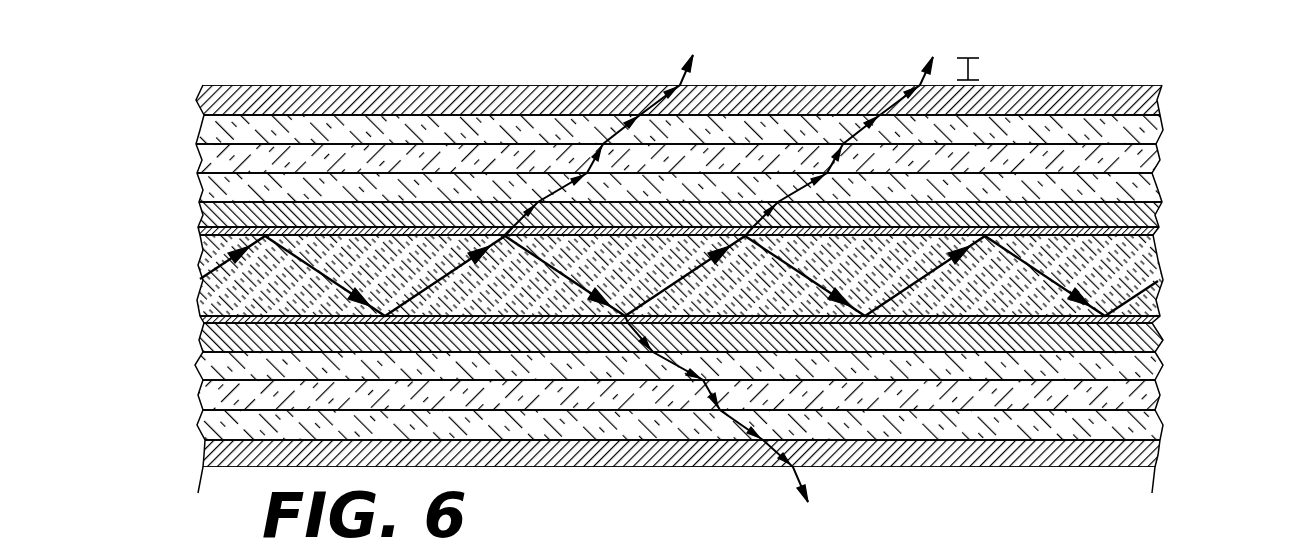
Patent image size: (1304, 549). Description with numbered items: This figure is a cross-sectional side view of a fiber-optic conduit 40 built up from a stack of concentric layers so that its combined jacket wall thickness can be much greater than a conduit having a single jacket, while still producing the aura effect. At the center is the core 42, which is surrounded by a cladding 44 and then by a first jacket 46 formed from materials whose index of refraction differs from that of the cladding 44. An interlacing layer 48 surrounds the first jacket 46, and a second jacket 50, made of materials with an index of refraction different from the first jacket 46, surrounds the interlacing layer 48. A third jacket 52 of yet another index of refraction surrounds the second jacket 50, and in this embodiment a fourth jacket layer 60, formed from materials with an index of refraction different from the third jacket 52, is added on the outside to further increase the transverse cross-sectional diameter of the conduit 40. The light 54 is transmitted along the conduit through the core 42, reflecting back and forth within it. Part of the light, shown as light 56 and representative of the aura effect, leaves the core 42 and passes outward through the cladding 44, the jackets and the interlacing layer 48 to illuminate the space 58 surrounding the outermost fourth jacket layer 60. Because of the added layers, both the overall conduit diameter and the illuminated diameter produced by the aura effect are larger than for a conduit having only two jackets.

The fiber-optic conduit 40 is at (1195, 370).
The core 42 is at (1137, 263).
The cladding 44 is at (1153, 233).
The first jacket 46 is at (1158, 220).
The interlacing layer 48 is at (1153, 192).
The second jacket 50 is at (1148, 160).
The third jacket 52 is at (1158, 130).
The light transmitted through the core 54 is at (1160, 297).
The aura effect light 56 is at (920, 80).
The space surrounding the outer jacket 58 is at (972, 56).
The fourth jacket layer 60 is at (1158, 100).